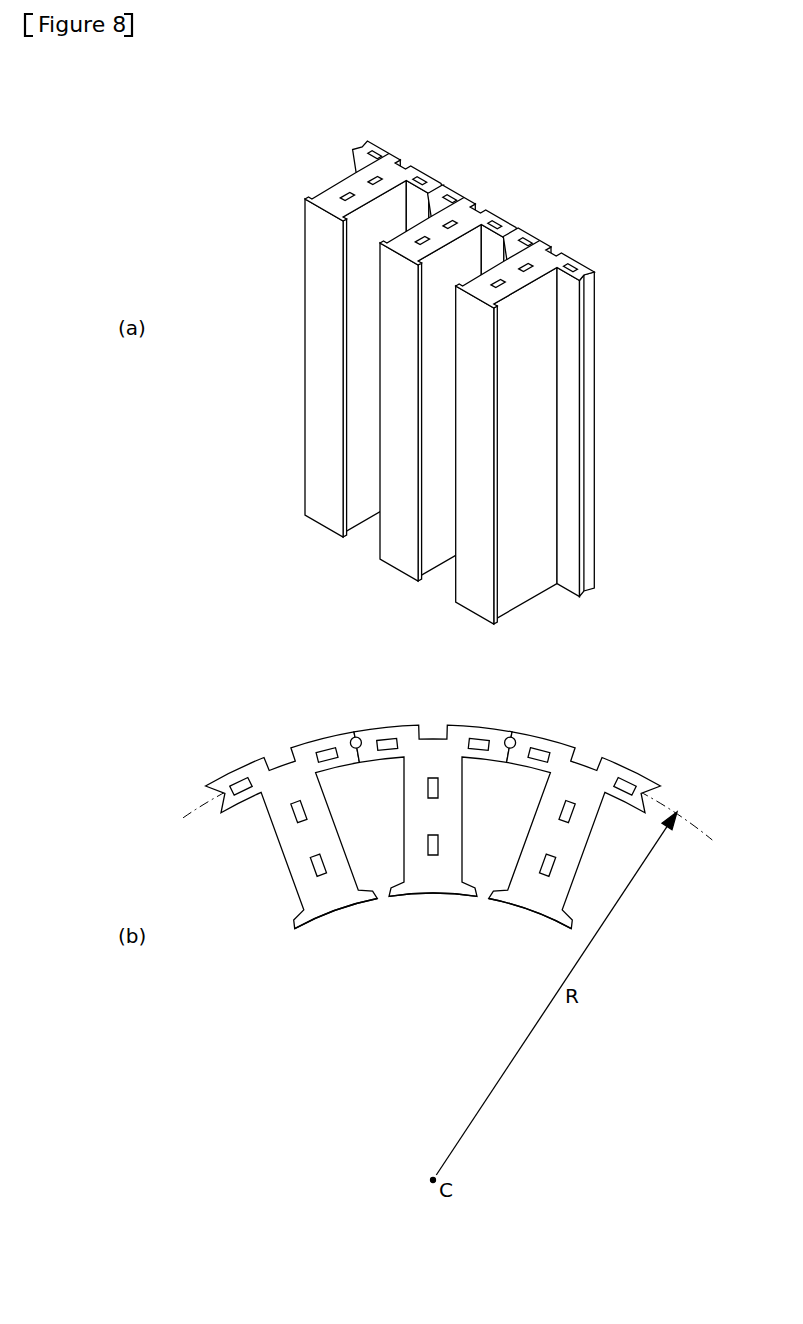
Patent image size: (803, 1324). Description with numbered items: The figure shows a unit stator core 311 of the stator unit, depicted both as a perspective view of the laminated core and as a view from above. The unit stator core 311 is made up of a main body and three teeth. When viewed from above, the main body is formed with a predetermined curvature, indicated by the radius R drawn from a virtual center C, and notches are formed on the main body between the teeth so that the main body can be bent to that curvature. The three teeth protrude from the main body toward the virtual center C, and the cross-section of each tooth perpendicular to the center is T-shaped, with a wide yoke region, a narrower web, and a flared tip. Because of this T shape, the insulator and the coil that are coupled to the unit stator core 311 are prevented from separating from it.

The unit stator core 311 is at (245, 131).